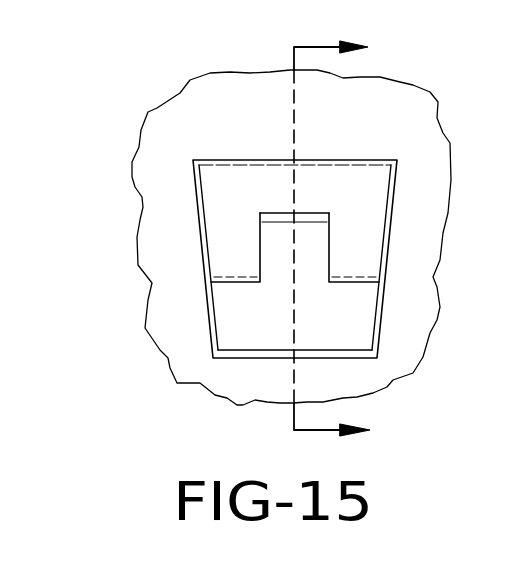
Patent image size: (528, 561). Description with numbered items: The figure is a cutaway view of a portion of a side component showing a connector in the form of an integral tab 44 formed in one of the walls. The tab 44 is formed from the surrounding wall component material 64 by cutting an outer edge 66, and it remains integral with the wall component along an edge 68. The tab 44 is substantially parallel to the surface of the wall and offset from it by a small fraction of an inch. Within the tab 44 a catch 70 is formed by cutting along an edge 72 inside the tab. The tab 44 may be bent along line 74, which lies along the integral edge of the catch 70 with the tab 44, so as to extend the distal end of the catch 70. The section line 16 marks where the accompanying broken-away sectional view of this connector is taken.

The section line 16- 16 is at (353, 240).
The integral tab 44 is at (242, 335).
The surrounding wall component material 64 is at (255, 385).
The outer edge 66 is at (380, 317).
The edge 68 is at (237, 158).
The catch 70 is at (273, 237).
The edge 72 is at (332, 252).
The bend line 74 is at (230, 280).